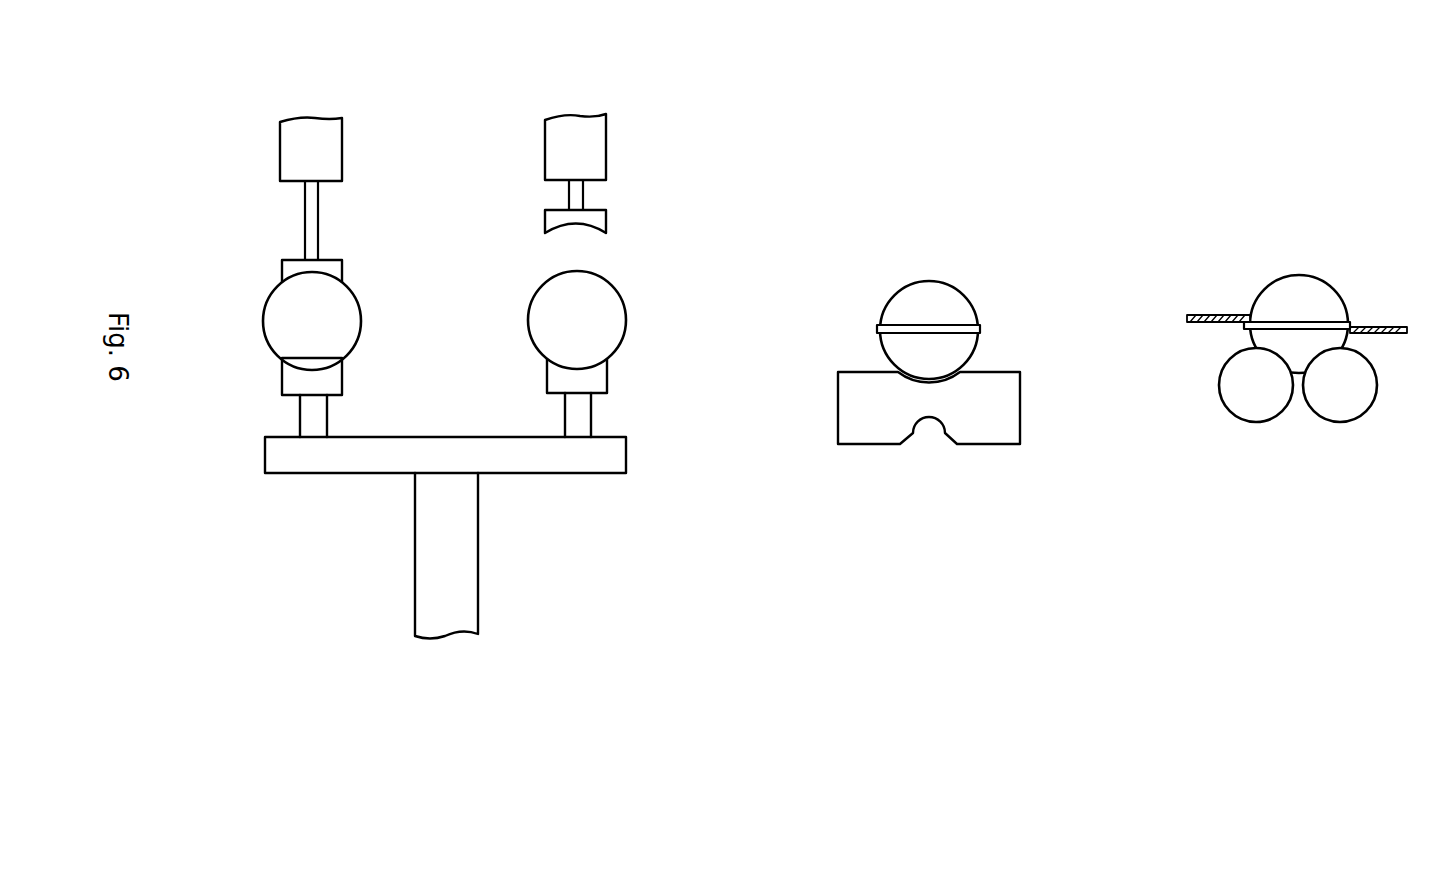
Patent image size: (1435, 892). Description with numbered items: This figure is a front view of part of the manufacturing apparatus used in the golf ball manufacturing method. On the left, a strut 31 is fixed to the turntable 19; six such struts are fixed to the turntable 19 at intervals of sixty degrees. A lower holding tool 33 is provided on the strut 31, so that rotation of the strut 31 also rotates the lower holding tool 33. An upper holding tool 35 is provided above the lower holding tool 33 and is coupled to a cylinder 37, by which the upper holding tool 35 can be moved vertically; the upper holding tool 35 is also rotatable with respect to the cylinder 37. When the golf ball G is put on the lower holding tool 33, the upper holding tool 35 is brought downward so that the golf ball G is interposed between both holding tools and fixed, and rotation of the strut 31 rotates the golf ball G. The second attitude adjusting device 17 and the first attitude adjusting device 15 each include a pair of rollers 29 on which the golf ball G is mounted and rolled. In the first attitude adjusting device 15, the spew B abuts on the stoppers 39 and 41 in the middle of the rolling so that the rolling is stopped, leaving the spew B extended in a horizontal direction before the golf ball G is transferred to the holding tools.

The first attitude adjusting device 15 is at (1308, 437).
The second attitude adjusting device 17 is at (967, 458).
The turntable 19 is at (492, 456).
The roller 29 is at (873, 425).
The strut 31 is at (306, 415).
The lower holding tool 33 is at (332, 375).
The upper holding tool 35 is at (332, 271).
The cylinder 37 is at (330, 154).
The stopper 39 is at (1400, 327).
The stopper 41 is at (1208, 315).
The golf ball G is at (340, 326).
The spew B is at (982, 328).